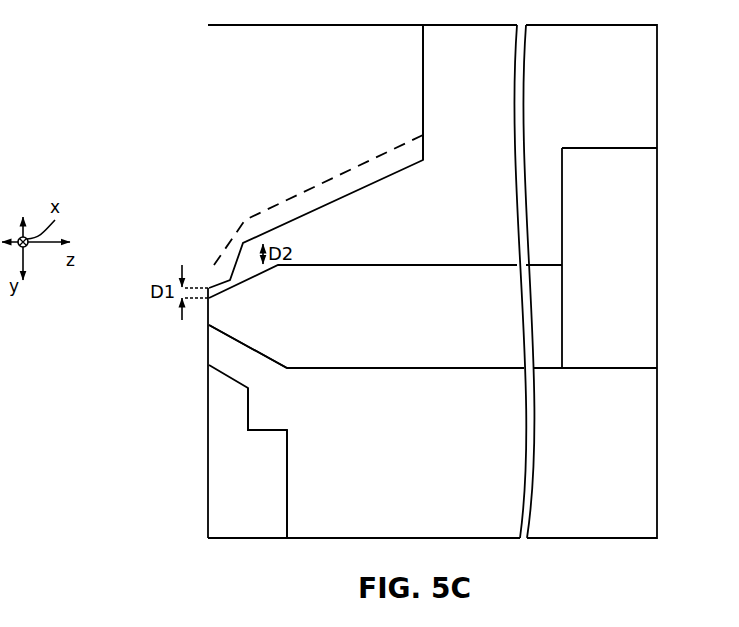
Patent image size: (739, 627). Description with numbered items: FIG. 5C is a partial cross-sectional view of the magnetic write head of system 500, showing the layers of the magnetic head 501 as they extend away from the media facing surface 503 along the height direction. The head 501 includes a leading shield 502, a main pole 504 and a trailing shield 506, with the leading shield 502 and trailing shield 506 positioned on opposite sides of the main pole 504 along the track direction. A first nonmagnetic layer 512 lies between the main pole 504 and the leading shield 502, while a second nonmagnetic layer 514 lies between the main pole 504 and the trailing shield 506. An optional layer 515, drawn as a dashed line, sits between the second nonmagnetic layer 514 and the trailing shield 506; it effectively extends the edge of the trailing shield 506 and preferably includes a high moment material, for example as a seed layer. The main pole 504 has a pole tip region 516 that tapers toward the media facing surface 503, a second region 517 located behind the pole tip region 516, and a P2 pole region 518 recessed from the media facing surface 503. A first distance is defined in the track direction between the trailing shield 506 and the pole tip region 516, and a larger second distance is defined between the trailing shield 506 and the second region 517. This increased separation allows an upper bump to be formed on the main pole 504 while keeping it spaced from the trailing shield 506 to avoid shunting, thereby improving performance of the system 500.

The system 500 is at (127, 67).
The magnetic head 501 is at (126, 331).
The leading shield 502 is at (248, 451).
The media facing surface 503 is at (207, 510).
The main pole 504 is at (285, 388).
The trailing shield 506 is at (316, 156).
The first nonmagnetic layer 512 is at (403, 484).
The second nonmagnetic layer 514 is at (470, 92).
The optional layer 515 is at (287, 197).
The pole tip region 516 is at (217, 337).
The second region 517 is at (433, 316).
The P2 pole region 518 is at (609, 258).